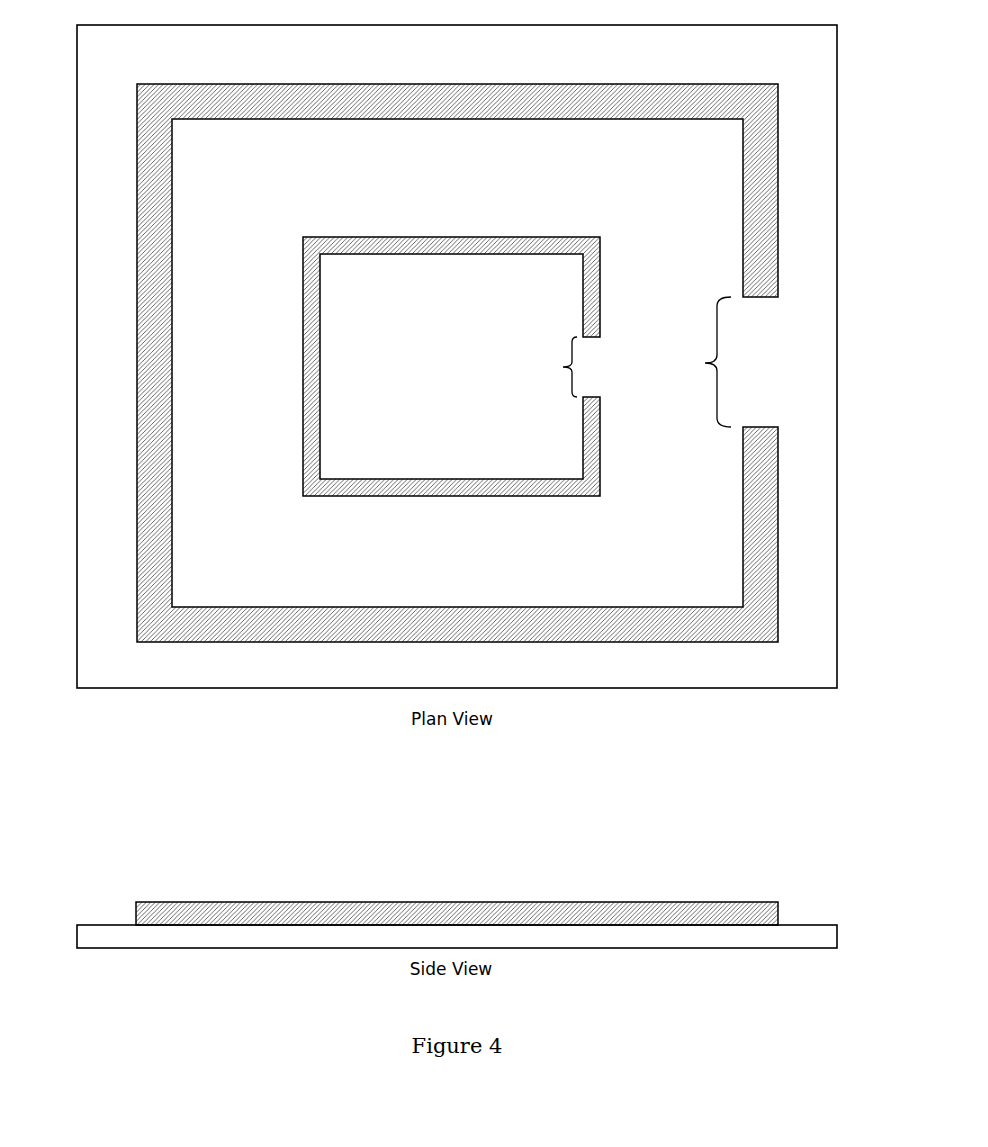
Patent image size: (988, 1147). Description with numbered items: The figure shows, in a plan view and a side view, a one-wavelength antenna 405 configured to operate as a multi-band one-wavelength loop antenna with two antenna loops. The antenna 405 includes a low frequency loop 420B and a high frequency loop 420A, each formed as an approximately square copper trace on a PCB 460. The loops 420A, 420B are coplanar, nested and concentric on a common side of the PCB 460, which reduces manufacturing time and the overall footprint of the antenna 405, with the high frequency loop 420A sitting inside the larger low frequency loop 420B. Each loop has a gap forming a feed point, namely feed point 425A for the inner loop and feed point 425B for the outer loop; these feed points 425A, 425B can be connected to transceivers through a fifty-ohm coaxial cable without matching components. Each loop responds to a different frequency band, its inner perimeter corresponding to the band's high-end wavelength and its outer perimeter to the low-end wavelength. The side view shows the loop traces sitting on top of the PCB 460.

The one-wavelength antenna 405 is at (181, 833).
The high frequency loop 420A is at (451, 366).
The low frequency loop 420B is at (457, 504).
The feed point 425A is at (525, 345).
The feed point 425B is at (676, 361).
The PCB 460 is at (813, 925).